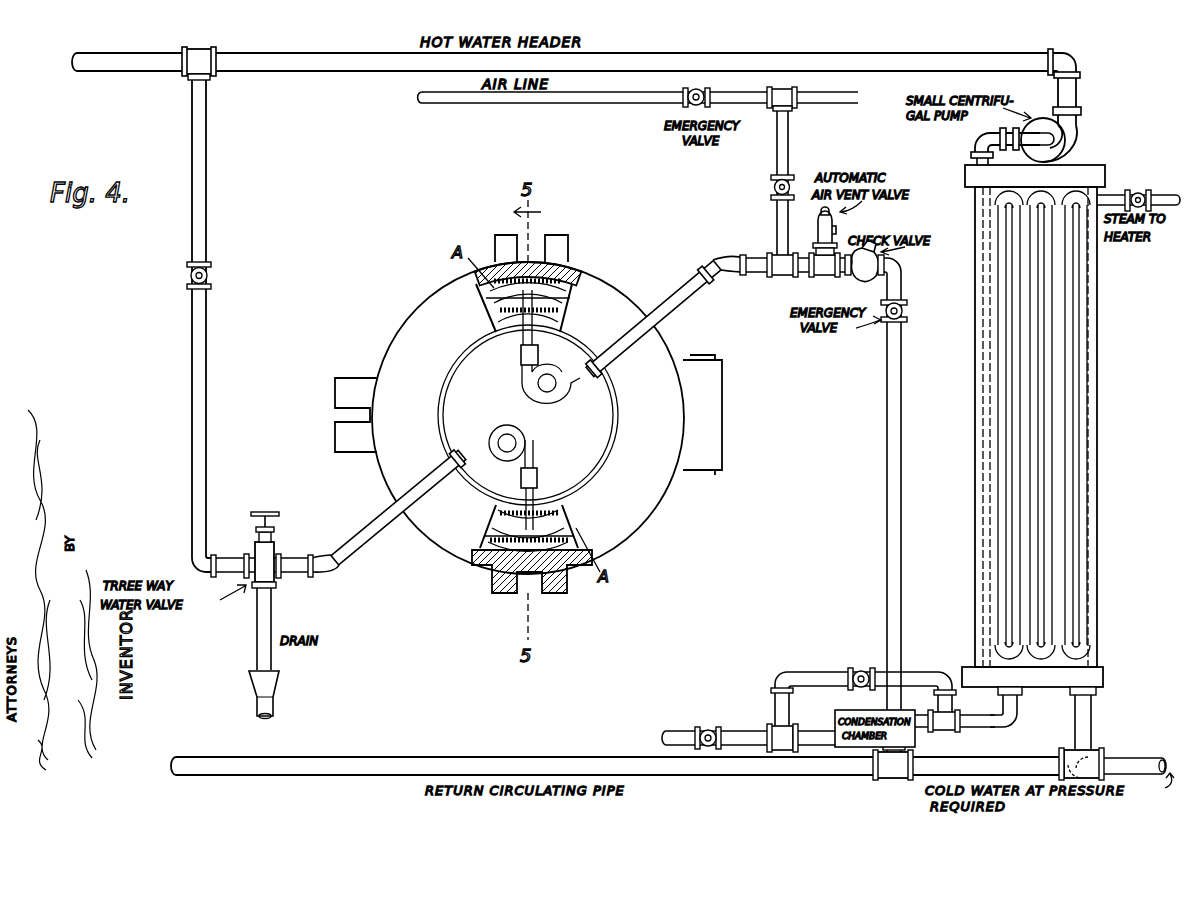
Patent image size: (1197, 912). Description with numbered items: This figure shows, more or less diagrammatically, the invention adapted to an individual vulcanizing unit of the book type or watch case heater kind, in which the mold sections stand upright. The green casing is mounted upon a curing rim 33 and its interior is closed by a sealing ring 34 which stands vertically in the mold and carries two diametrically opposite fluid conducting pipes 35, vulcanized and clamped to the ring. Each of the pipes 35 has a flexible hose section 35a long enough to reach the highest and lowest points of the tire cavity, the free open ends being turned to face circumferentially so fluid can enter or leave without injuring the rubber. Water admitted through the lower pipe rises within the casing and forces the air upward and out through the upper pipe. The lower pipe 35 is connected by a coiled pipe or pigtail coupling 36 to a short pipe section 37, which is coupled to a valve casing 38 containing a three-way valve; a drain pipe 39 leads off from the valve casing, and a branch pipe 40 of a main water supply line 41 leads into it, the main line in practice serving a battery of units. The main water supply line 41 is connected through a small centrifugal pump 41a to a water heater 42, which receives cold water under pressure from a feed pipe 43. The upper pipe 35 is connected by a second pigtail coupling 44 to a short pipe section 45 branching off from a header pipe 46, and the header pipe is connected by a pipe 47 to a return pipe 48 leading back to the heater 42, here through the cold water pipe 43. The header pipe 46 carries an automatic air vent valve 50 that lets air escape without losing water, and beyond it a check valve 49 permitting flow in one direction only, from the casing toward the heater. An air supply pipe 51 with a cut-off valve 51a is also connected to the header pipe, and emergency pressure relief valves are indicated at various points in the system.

The curing rim 33 is at (522, 330).
The sealing ring 34 is at (490, 296).
The fluid conducting pipes 35 is at (560, 326).
The flexible hose sections 35a is at (574, 300).
The pigtail coupling 36 is at (528, 446).
The short pipe section 37 is at (462, 452).
The valve casing 38 is at (275, 563).
The drain pipe 39 is at (272, 604).
The branch pipe 40 is at (192, 473).
The main water supply line 41 is at (305, 53).
The small centrifugal pump 41a is at (1073, 142).
The water heater 42 is at (1130, 285).
The feed pipe 43 is at (1140, 757).
The pigtail coupling 44 is at (520, 362).
The short pipe section 45 is at (664, 317).
The header pipe 46 is at (795, 274).
The pipe 47 is at (887, 501).
The return pipe 48 is at (505, 757).
The check valve 49 is at (862, 278).
The automatic air vent valve 50 is at (838, 228).
The air supply pipe 51 is at (777, 219).
The cut-off valve 51a is at (771, 187).